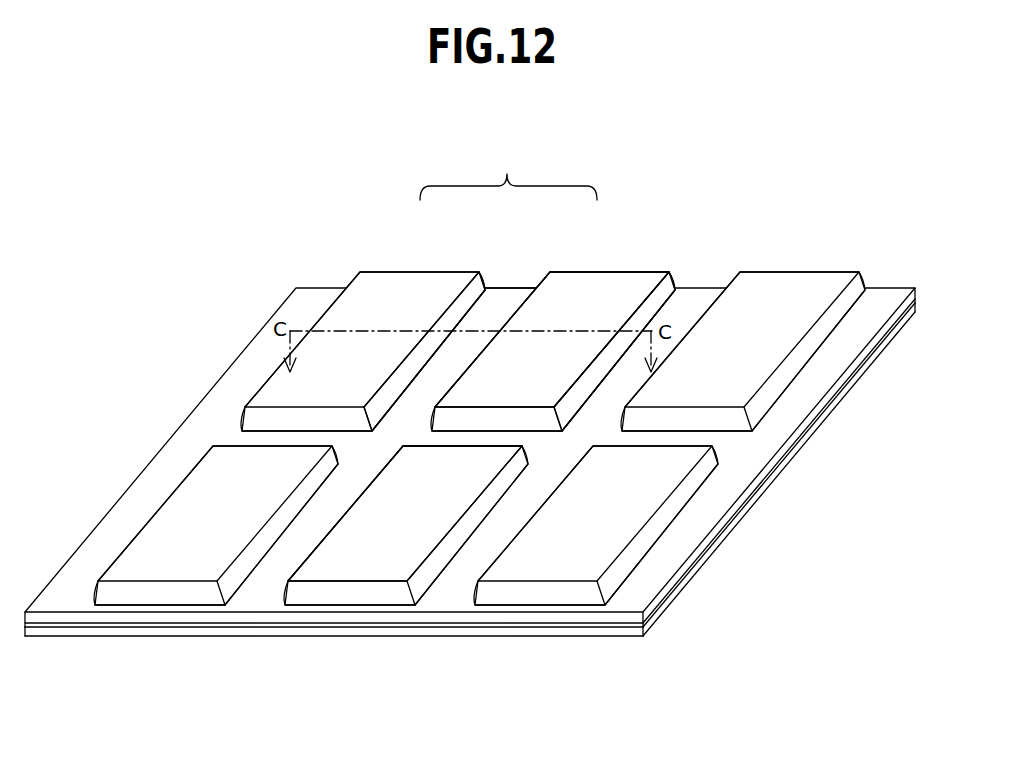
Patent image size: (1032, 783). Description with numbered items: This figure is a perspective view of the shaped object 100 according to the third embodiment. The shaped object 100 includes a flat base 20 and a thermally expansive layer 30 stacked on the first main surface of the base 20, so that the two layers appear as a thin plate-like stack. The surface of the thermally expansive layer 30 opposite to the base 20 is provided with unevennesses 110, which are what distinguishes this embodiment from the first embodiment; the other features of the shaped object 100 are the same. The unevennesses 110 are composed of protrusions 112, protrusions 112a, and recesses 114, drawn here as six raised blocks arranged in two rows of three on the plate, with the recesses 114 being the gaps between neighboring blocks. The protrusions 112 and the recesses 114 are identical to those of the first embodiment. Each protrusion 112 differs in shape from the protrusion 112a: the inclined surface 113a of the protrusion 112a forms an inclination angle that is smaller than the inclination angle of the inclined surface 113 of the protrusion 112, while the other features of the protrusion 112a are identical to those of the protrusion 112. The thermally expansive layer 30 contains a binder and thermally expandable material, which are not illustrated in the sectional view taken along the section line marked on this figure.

The shaped object 100 is at (474, 389).
The unevennesses 110 is at (508, 173).
The protrusion 112 is at (448, 271).
The protrusion 112a is at (568, 271).
The inclined surface 113 is at (449, 316).
The inclined surface 113a is at (670, 294).
The recess 114 is at (500, 318).
The base 20 is at (757, 502).
The thermally expansive layer 30 is at (846, 373).